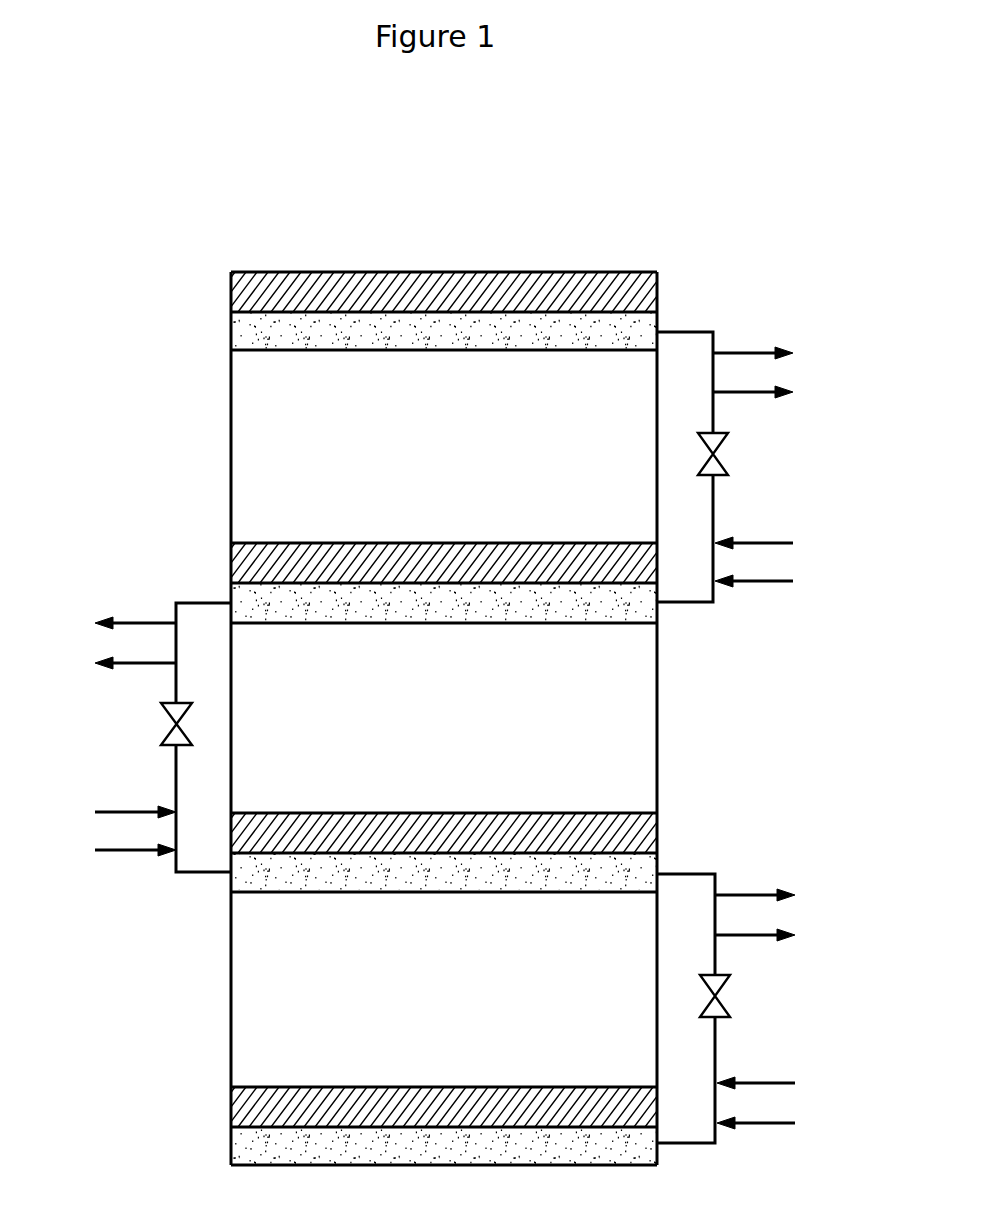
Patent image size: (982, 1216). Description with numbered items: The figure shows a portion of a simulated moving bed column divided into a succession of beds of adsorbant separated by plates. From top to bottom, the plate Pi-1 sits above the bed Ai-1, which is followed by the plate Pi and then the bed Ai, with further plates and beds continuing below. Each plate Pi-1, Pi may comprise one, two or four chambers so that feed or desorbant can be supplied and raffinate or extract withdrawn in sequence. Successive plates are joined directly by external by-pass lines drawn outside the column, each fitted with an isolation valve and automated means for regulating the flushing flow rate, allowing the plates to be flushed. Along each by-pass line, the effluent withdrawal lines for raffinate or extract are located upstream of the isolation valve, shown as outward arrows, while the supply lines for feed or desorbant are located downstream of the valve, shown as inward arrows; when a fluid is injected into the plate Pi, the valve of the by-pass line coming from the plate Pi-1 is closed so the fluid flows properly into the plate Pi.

The plate Pi-1 is at (445, 311).
The bed of adsorbant Ai-1 is at (444, 446).
The plate Pi is at (445, 583).
The bed of adsorbant Ai is at (444, 718).